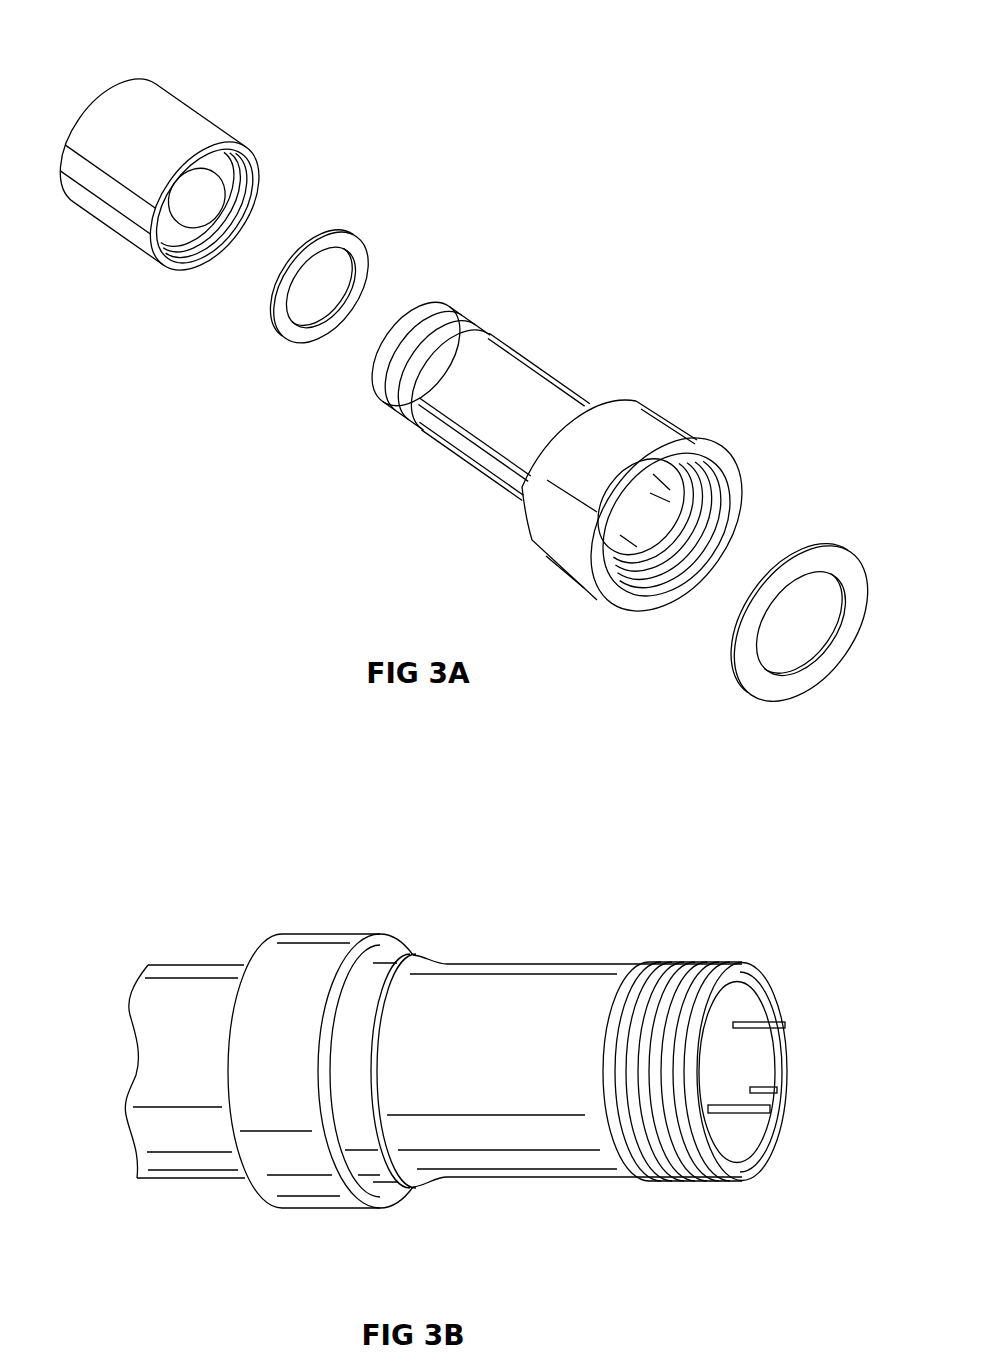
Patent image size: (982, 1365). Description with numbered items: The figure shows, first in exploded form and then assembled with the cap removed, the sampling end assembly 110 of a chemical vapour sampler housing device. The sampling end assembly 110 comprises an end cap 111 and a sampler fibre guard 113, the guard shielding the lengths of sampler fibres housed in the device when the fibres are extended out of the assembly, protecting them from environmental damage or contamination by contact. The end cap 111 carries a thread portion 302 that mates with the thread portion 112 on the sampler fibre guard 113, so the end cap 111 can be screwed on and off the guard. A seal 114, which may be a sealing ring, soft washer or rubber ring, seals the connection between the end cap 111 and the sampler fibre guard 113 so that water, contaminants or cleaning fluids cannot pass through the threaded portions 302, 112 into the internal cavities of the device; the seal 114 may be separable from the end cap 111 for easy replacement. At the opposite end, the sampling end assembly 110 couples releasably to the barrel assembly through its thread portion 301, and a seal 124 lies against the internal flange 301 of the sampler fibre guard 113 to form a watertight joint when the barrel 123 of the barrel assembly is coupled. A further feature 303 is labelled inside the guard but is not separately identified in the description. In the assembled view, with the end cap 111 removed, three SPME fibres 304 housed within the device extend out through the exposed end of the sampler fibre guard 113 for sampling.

In FIG. 3A, the sampling end assembly 110 is at (432, 522).
In FIG. 3A, the end cap 111 is at (207, 113).
In FIG. 3A, the mating thread portion 112 is at (458, 320).
In FIG. 3B, the mating thread portion 112 is at (694, 961).
In FIG. 3A, the sampler fibre guard 113 is at (537, 397).
In FIG. 3B, the sampler fibre guard 113 is at (484, 1136).
In FIG. 3A, the seal 114 is at (341, 232).
In FIG. 3B, the barrel 123 is at (188, 1125).
In FIG. 3A, the seal 124 is at (745, 693).
In FIG. 3A, the thread portion 301 is at (667, 580).
In FIG. 3A, the thread portion 302 is at (206, 243).
In FIG. 3A, the internal thread 303 is at (692, 488).
In FIG. 3B, the SPME fibres 304 is at (770, 1092).